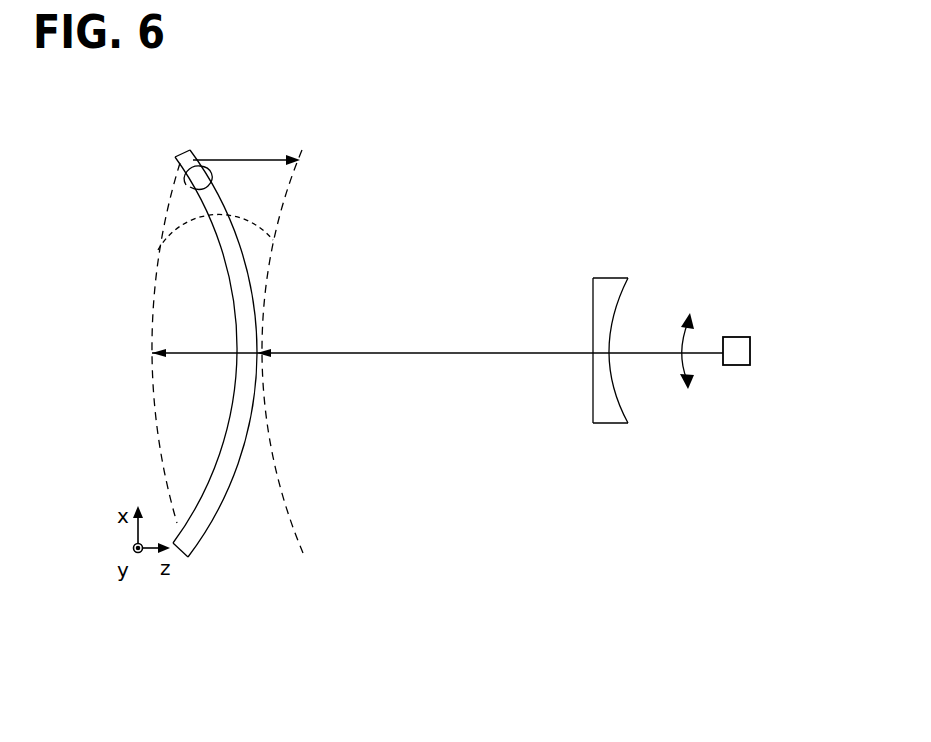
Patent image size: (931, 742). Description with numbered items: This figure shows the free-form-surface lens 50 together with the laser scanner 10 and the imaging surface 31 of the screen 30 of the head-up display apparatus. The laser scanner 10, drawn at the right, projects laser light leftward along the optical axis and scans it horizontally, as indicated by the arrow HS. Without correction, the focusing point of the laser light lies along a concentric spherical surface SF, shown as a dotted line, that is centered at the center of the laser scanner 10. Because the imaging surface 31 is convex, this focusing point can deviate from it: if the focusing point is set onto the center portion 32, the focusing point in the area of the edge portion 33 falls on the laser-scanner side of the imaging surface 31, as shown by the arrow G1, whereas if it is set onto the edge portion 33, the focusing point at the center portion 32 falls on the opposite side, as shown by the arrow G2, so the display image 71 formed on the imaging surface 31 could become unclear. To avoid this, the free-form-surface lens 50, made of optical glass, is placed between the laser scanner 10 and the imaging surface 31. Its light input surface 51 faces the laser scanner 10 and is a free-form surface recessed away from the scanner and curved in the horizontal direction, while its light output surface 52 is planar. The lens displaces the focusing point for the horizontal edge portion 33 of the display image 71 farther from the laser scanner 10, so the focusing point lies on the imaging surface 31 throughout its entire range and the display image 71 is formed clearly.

The laser scanner 10 is at (740, 337).
The screen 30 is at (222, 384).
The imaging surface 31 is at (217, 500).
The center portion 32 is at (257, 372).
The edge portion 33 is at (193, 548).
The display image 71 is at (186, 185).
The free-form-surface lens 50 is at (608, 322).
The light input surface 51 is at (613, 320).
The light output surface 52 is at (593, 320).
The horizontal scanning arrow HS is at (678, 338).
The concentric spherical surface SF is at (185, 224).
The focusing point deviation toward laser scanner G1 is at (252, 160).
The focusing point deviation away from laser scanner G2 is at (195, 351).